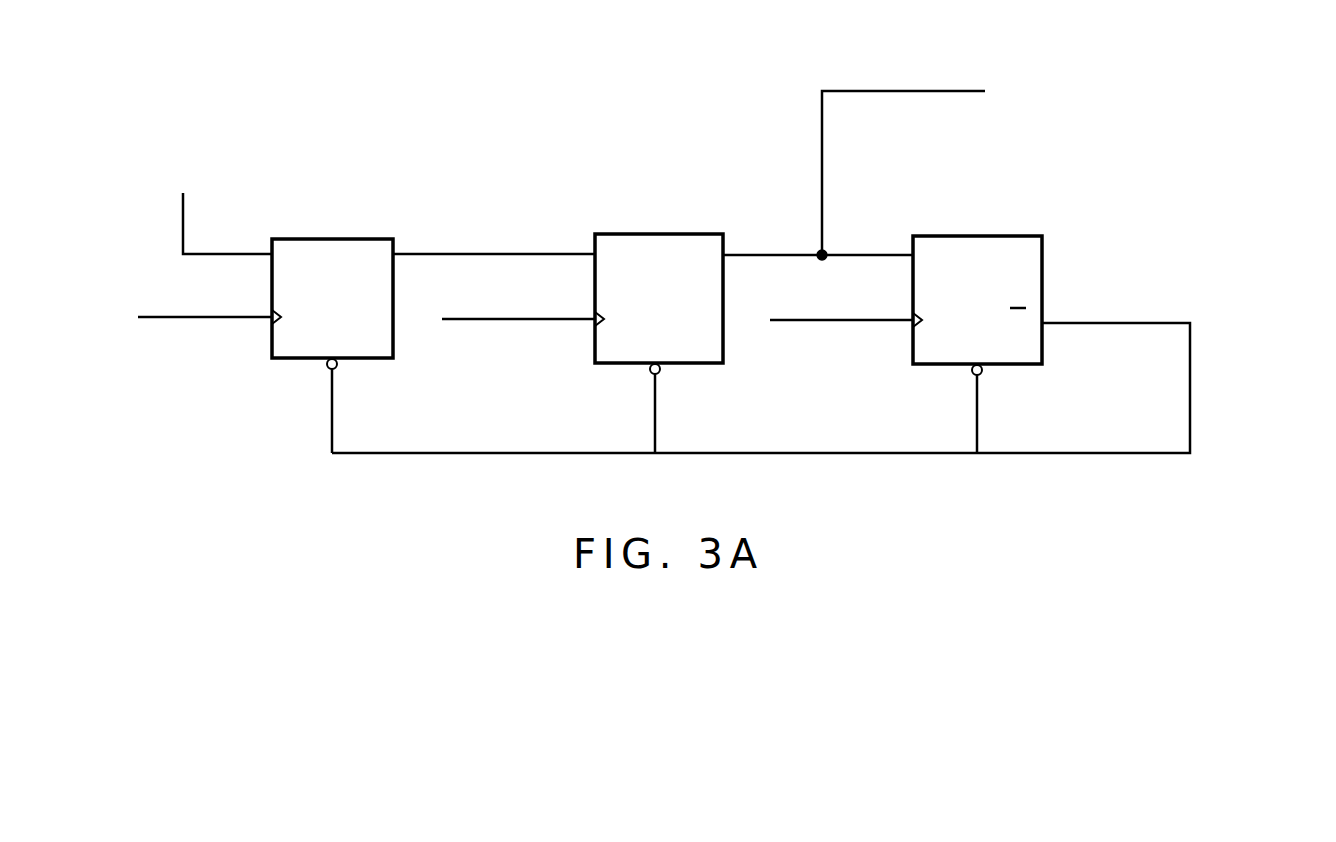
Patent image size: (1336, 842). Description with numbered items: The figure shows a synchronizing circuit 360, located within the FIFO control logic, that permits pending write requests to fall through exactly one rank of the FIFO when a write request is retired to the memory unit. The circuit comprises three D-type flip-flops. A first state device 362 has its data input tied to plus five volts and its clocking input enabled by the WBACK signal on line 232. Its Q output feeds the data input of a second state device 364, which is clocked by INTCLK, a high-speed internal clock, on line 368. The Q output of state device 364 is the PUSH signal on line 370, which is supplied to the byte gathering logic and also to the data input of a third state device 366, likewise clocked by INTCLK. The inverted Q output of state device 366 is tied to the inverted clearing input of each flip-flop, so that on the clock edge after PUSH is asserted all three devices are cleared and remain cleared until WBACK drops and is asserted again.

The synchronizing circuit 360 is at (405, 50).
The state device 362 is at (330, 238).
The state device 364 is at (653, 233).
The state device 366 is at (1023, 234).
The line 232 is at (186, 320).
The line 368 is at (502, 323).
The line 370 is at (838, 90).